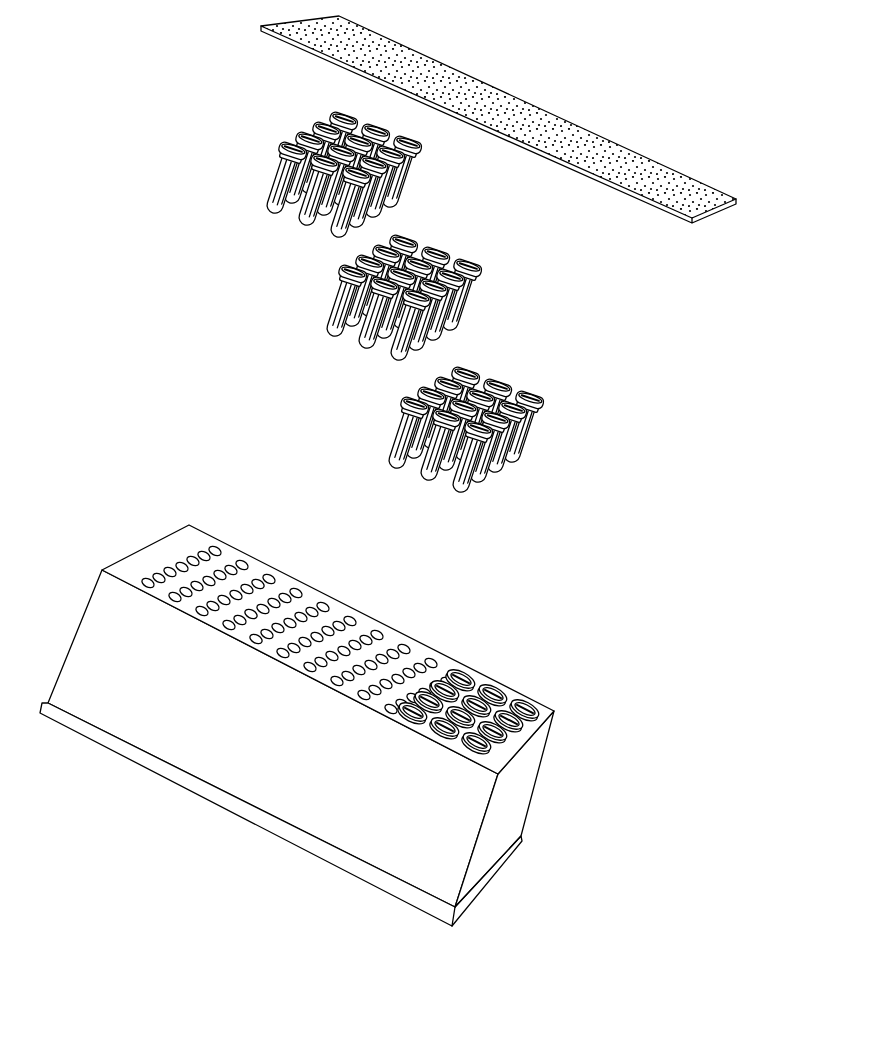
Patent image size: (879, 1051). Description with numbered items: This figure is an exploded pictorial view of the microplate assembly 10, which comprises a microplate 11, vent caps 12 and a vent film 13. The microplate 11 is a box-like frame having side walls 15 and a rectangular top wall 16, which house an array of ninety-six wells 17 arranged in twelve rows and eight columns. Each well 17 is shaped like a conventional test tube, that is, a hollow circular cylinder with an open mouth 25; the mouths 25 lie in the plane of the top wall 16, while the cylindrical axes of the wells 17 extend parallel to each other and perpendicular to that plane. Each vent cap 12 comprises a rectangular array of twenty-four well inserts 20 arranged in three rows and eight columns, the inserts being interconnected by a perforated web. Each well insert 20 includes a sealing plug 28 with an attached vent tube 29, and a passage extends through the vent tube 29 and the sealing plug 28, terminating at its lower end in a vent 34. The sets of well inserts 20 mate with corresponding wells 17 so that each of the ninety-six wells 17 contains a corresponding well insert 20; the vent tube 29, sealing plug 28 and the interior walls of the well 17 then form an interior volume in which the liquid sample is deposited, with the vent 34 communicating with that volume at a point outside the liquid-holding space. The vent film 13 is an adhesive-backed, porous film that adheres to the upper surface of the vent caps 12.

The microplate assembly 10 is at (163, 180).
The microplate 11 is at (522, 803).
The vent cap 12 is at (430, 434).
The vent film 13 is at (702, 182).
The side walls 15 is at (93, 635).
The top wall 16 is at (152, 557).
The wells 17 is at (275, 572).
The well insert 20 is at (302, 218).
The open mouth 25 is at (478, 690).
The sealing plug 28 is at (292, 147).
The vent tube 29 is at (283, 182).
The vent 34 is at (332, 337).